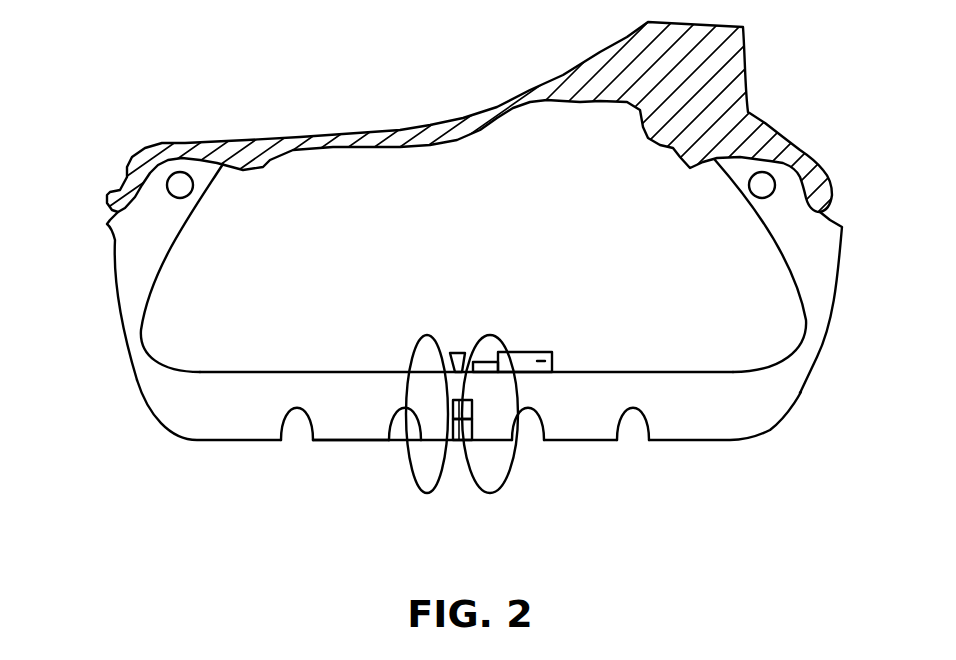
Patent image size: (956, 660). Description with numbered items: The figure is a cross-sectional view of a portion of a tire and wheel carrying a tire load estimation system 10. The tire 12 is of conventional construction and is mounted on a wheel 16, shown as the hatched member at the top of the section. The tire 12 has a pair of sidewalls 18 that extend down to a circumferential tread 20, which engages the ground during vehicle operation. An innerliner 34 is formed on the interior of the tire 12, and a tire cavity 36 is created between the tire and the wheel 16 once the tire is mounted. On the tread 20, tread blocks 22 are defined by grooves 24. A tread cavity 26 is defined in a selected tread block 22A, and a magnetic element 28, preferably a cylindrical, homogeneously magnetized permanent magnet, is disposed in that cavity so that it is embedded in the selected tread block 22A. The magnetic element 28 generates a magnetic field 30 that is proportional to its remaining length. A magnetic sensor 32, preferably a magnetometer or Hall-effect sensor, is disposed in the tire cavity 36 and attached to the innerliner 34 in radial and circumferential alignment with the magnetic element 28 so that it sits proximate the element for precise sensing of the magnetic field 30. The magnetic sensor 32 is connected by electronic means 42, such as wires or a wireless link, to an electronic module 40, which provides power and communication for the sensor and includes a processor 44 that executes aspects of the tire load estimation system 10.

The tire load estimation system 10 is at (690, 490).
The tire 12 is at (780, 423).
The wheel 16 is at (247, 140).
The sidewall 18 is at (130, 278).
The tread 20 is at (343, 443).
The tread block 22 is at (373, 427).
The selected tread block 22A is at (495, 430).
The groove 24 is at (313, 430).
The tread cavity 26 is at (460, 433).
The magnetic element 28 is at (473, 407).
The magnetic field 30 is at (423, 337).
The magnetic sensor 32 is at (460, 353).
The innerliner 34 is at (267, 372).
The tire cavity 36 is at (420, 198).
The electronic module 40 is at (525, 352).
The electronic means 42 is at (487, 362).
The processor 44 is at (540, 361).